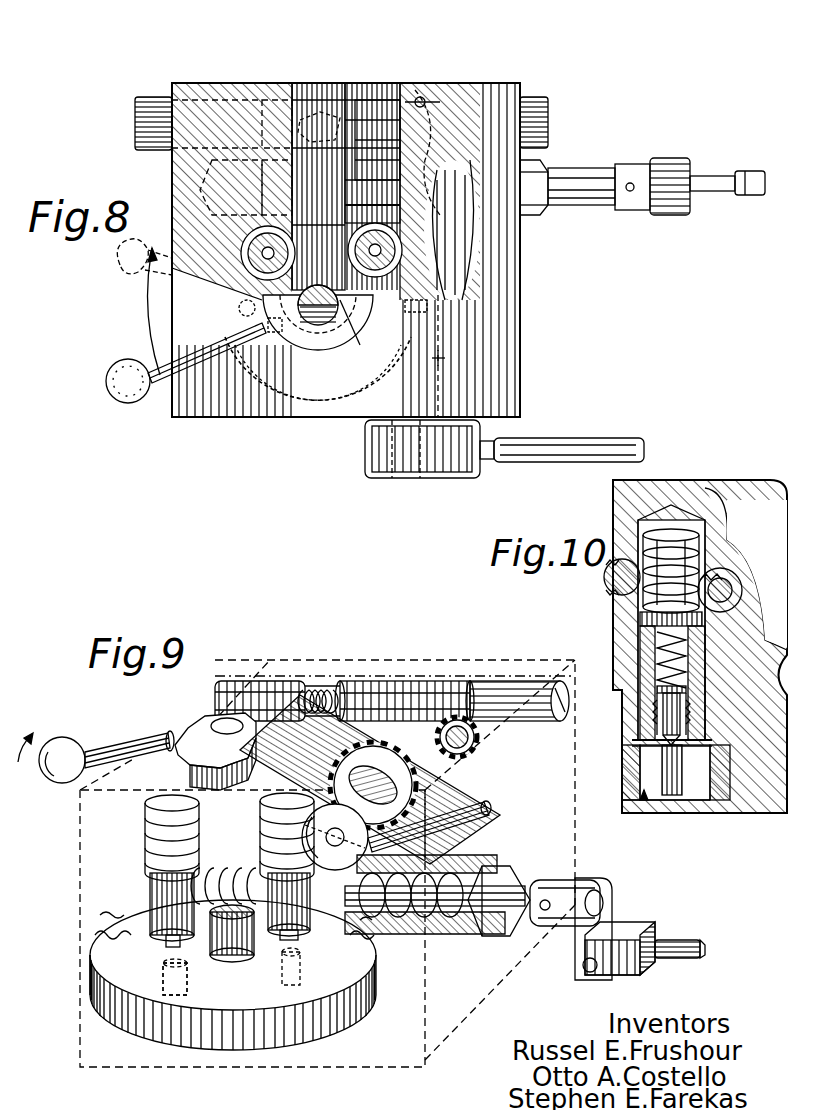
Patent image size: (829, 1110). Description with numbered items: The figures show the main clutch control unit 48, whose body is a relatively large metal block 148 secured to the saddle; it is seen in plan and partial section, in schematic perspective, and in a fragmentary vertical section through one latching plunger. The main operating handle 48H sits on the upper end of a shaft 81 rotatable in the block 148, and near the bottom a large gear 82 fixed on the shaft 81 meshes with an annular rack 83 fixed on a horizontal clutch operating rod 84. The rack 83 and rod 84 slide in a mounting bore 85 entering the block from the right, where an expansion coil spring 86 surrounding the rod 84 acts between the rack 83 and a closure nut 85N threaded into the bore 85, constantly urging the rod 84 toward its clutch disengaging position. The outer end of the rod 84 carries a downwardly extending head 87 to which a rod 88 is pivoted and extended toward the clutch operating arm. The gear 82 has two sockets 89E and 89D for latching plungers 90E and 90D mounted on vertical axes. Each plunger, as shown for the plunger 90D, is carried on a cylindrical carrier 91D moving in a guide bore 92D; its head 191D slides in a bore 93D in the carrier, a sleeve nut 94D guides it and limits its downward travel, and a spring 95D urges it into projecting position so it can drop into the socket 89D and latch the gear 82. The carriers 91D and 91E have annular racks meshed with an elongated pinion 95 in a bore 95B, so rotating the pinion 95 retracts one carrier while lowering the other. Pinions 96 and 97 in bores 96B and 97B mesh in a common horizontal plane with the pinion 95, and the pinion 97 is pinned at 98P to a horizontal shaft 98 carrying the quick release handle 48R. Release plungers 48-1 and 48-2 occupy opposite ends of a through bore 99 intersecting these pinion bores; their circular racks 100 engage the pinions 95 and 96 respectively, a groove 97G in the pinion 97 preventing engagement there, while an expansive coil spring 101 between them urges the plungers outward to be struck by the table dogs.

In FIG. 8, the main clutch control unit 48 is at (408, 249).
In FIG. 9, the main clutch control unit 48 is at (361, 825).
In FIG. 8, the metal block 148 is at (512, 385).
In FIG. 9, the metal block 148 is at (112, 1062).
In FIG. 10, the metal block 148 is at (728, 480).
In FIG. 8, the release plunger 48-1 is at (142, 118).
In FIG. 9, the release plunger 48-1 is at (280, 681).
In FIG. 8, the release plunger 48-2 is at (550, 120).
In FIG. 9, the release plunger 48-2 is at (552, 681).
In FIG. 8, the main operating handle 48H is at (115, 400).
In FIG. 9, the main operating handle 48H is at (60, 740).
In FIG. 8, the quick release handle 48R is at (575, 440).
In FIG. 9, the quick release handle 48R is at (492, 812).
In FIG. 8, the shaft 81 is at (318, 322).
In FIG. 9, the shaft 81 is at (232, 948).
In FIG. 8, the gear 82 is at (285, 400).
In FIG. 9, the gear 82 is at (325, 1002).
In FIG. 10, the gear 82 is at (644, 800).
In FIG. 8, the annular rack 83 is at (240, 250).
In FIG. 9, the annular rack 83 is at (187, 978).
In FIG. 8, the clutch operating rod 84 is at (578, 185).
In FIG. 9, the clutch operating rod 84 is at (462, 905).
In FIG. 8, the mounting bore 85 is at (470, 225).
In FIG. 9, the mounting bore 85 is at (438, 870).
In FIG. 8, the closure nut 85N is at (552, 210).
In FIG. 9, the closure nut 85N is at (505, 930).
In FIG. 8, the expansion coil spring 86 is at (458, 250).
In FIG. 9, the expansion coil spring 86 is at (412, 925).
In FIG. 8, the head 87 is at (660, 205).
In FIG. 9, the head 87 is at (585, 930).
In FIG. 8, the rod 88 is at (745, 196).
In FIG. 9, the rod 88 is at (678, 940).
In FIG. 9, the bore 89D is at (300, 965).
In FIG. 10, the bore 89D is at (672, 795).
In FIG. 8, the bore 89E is at (238, 320).
In FIG. 9, the bore 89E is at (162, 975).
In FIG. 8, the latching plunger 90D is at (430, 296).
In FIG. 9, the latching plunger 90D is at (298, 936).
In FIG. 10, the latching plunger 90D is at (690, 740).
In FIG. 8, the latching plunger 90E is at (240, 290).
In FIG. 9, the latching plunger 90E is at (165, 941).
In FIG. 9, the cylindrical carrier 91D is at (280, 935).
In FIG. 10, the cylindrical carrier 91D is at (684, 712).
In FIG. 9, the cylindrical carrier 91E is at (145, 832).
In FIG. 10, the guide bore 92D is at (690, 700).
In FIG. 10, the bore 93D is at (686, 636).
In FIG. 10, the sleeve nut 94D is at (690, 740).
In FIG. 8, the elongated pinion 95 is at (325, 83).
In FIG. 9, the elongated pinion 95 is at (312, 752).
In FIG. 10, the elongated pinion 95 is at (612, 572).
In FIG. 8, the bore 95B is at (330, 333).
In FIG. 10, the bore 95B is at (640, 620).
In FIG. 9, the spring 95D is at (565, 688).
In FIG. 10, the spring 95D is at (655, 630).
In FIG. 8, the elongated pinion 96 is at (362, 83).
In FIG. 9, the elongated pinion 96 is at (420, 681).
In FIG. 10, the bore 96B is at (718, 530).
In FIG. 8, the elongated pinion 97 is at (395, 100).
In FIG. 9, the elongated pinion 97 is at (420, 800).
In FIG. 10, the bore 97B is at (728, 568).
In FIG. 8, the groove 97G is at (440, 120).
In FIG. 9, the groove 97G is at (478, 742).
In FIG. 8, the shaft 98 is at (445, 360).
In FIG. 8, the pin 98P is at (422, 97).
In FIG. 8, the bore 99 is at (200, 100).
In FIG. 8, the circular rack 100 is at (278, 100).
In FIG. 9, the expansive coil spring 101 is at (318, 690).
In FIG. 10, the head 191D is at (690, 688).